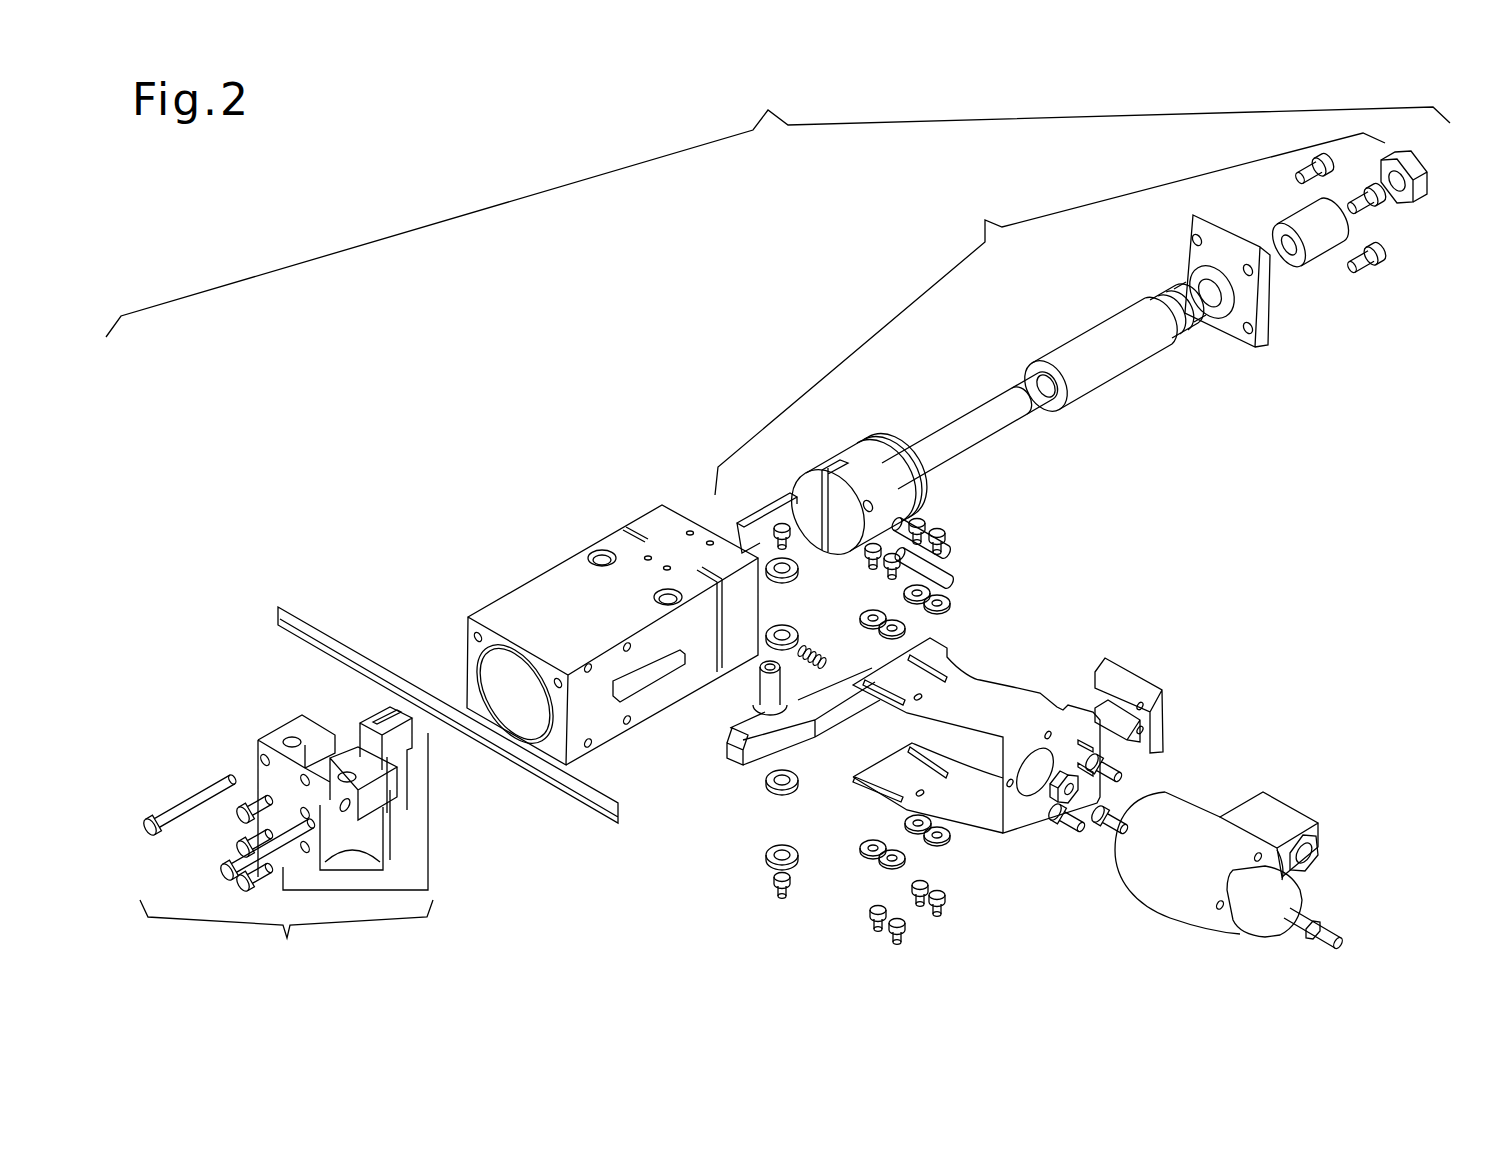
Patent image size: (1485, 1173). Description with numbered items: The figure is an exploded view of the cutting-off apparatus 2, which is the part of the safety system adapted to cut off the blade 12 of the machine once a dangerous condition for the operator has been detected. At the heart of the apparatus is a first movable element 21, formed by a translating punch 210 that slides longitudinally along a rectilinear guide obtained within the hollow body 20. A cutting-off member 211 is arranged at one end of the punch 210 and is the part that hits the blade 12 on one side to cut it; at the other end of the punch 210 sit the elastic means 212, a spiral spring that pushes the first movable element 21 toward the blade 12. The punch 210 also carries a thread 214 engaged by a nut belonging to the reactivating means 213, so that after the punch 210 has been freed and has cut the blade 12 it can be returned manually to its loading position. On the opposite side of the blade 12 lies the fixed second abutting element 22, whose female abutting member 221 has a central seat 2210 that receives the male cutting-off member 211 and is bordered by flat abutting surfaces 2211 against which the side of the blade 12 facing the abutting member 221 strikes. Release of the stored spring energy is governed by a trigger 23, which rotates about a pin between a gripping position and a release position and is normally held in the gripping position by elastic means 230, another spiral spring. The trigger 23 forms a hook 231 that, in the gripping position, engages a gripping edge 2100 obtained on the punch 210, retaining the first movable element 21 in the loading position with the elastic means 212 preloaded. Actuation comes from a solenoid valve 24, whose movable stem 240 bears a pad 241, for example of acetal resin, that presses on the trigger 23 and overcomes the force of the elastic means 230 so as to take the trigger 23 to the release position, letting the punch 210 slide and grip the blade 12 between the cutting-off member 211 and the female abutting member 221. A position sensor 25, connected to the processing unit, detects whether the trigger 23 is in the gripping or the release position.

The cutting-off apparatus 2 is at (778, 209).
The blade 12 is at (320, 642).
The hollow body 20 is at (530, 603).
The first movable element 21 is at (1091, 350).
The translating punch 210 is at (1031, 424).
The gripping edge 2100 is at (852, 443).
The cutting-off member 211 is at (760, 505).
The elastic means 212 is at (1185, 328).
The reactivating means 213 is at (1426, 214).
The thread 214 is at (1062, 383).
The second abutting element 22 is at (328, 788).
The female abutting member 221 is at (432, 817).
The seat 2210 is at (254, 706).
The abutting surfaces 2211 is at (382, 742).
The trigger 23 is at (871, 753).
The elastic means 230 is at (827, 660).
The hook 231 is at (730, 735).
The solenoid valve 24 is at (1201, 840).
The movable stem 240 is at (1122, 825).
The pad 241 is at (1048, 795).
The position sensor 25 is at (1123, 680).